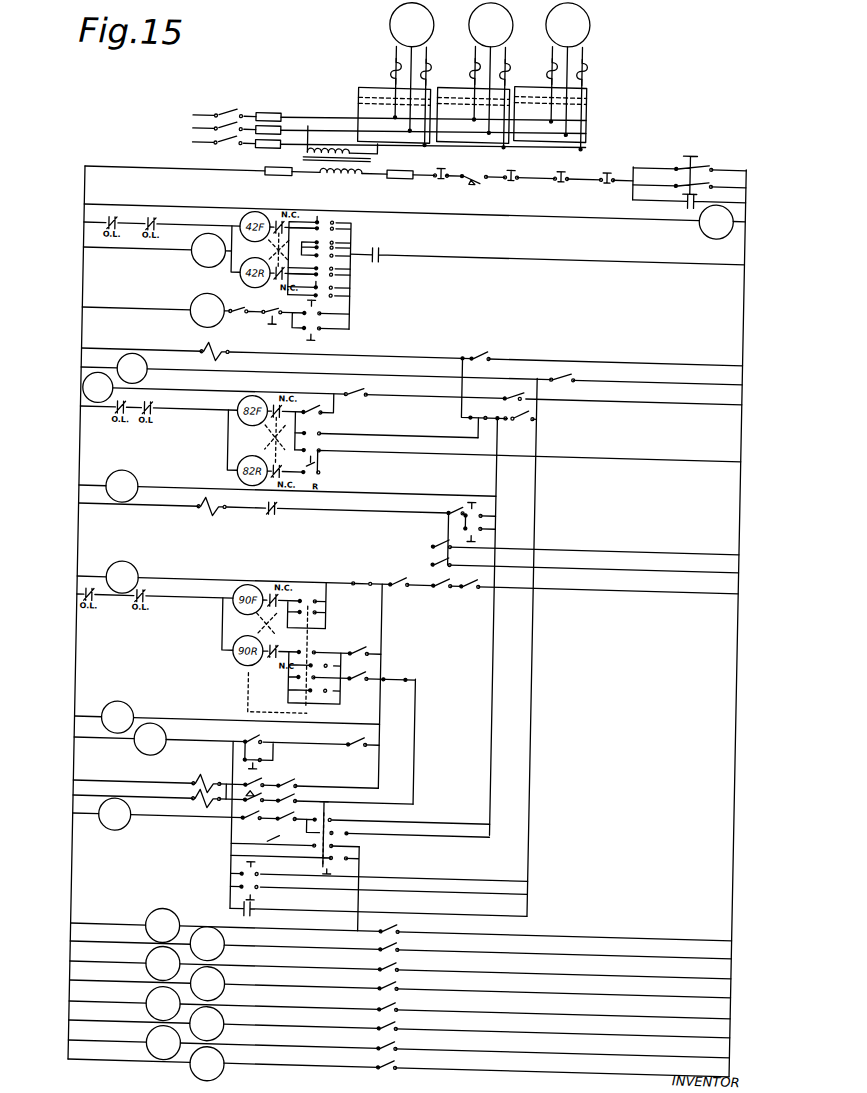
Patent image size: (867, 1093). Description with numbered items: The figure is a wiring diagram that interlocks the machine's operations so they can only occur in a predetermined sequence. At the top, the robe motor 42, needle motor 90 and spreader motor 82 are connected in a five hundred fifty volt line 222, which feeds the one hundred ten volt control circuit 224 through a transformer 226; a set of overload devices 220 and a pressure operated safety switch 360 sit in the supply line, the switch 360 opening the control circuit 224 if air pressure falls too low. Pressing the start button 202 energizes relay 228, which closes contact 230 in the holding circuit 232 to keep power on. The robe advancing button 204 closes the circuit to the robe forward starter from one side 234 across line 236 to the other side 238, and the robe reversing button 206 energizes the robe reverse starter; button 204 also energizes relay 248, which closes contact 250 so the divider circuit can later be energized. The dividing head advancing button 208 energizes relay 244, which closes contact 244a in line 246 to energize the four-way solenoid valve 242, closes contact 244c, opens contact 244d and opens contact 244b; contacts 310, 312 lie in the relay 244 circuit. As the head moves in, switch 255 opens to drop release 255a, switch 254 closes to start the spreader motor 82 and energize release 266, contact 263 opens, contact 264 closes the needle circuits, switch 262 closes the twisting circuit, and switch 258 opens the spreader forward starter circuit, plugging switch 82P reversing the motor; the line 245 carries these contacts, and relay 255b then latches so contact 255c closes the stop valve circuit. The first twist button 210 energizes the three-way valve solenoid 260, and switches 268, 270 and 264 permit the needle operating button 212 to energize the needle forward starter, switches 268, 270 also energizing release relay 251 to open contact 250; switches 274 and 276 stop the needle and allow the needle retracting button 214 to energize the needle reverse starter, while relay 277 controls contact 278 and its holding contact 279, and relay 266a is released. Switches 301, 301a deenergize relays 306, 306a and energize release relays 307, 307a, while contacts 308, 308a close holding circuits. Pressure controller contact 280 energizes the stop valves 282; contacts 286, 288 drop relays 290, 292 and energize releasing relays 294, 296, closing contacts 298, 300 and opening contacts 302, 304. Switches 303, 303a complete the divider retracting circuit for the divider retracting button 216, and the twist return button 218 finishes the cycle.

The robe motor 42 is at (388, 6).
The needle motor 90 is at (466, 9).
The spreader motor 82 is at (544, 6).
The 550 volt line 222 is at (316, 84).
The control circuit 224 is at (111, 159).
The transformer 226 is at (300, 144).
The overload contacts 220 is at (595, 151).
The start button 202 is at (703, 154).
The pressure operated safety switch 360 is at (489, 179).
The holding circuit 232 is at (633, 176).
The contact 230 is at (681, 187).
The relay 228 is at (736, 203).
The line 236 is at (501, 231).
The robe advancing button 204 is at (336, 211).
The robe reversing button 206 is at (351, 272).
The contact 250 is at (390, 239).
The other side of control circuit 238 is at (85, 280).
The one side of control circuit 234 is at (744, 285).
The relay 248 is at (194, 255).
The relay 244 is at (193, 302).
The four-way solenoid valve 242 is at (197, 337).
The contact 312 is at (240, 316).
The contact 310 is at (278, 313).
The dividing head advancing button 208 is at (322, 328).
The contact 244a is at (485, 341).
The line 246 is at (593, 354).
The release 255a is at (121, 362).
The release relay 266 is at (89, 385).
The contact 244c is at (329, 382).
The switch 254 is at (366, 387).
The switch 255 is at (572, 366).
The switch 258 is at (537, 390).
The line 245 is at (466, 427).
The contact 244d is at (517, 457).
The contact 244b is at (386, 441).
The plugging switch 82P is at (333, 461).
The relay 255b is at (121, 474).
The three-way valve solenoid 260 is at (220, 506).
The contact 278 is at (292, 506).
The switch 262 is at (443, 500).
The first twist button 210 is at (502, 507).
The contact 308 is at (442, 526).
The contact 308a is at (447, 547).
The release relay 251 is at (142, 544).
The needle operating button 212 is at (326, 572).
The switch 270 is at (405, 683).
The switch 268 is at (472, 585).
The switch 264 is at (483, 569).
The needle retracting button 214 is at (308, 680).
The switch 274 is at (365, 638).
The switch 276 is at (372, 693).
The contact 263 is at (432, 681).
The relay 266a is at (125, 702).
The relay 277 is at (176, 750).
The contact 302 is at (261, 737).
The contact 304 is at (291, 739).
The stop valves 282 is at (201, 780).
The pressure controller contact 280 is at (283, 773).
The contact 255c is at (302, 776).
The contact 300 is at (257, 796).
The contact 298 is at (302, 791).
The switch 303 is at (256, 816).
The switch 303a is at (311, 833).
The divider retracting button 216 is at (376, 830).
The twist return button 218 is at (246, 871).
The contact 279 is at (270, 910).
The relay 306 is at (164, 908).
The release relay 307 is at (233, 934).
The relay 306a is at (163, 953).
The release relay 307a is at (233, 974).
The relay 290 is at (164, 993).
The releasing relay 294 is at (234, 1013).
The relay 292 is at (164, 1031).
The releasing relay 296 is at (235, 1053).
The switch 301 is at (431, 931).
The switch 301a is at (429, 970).
The contact 286 is at (429, 1006).
The contact 288 is at (430, 1042).